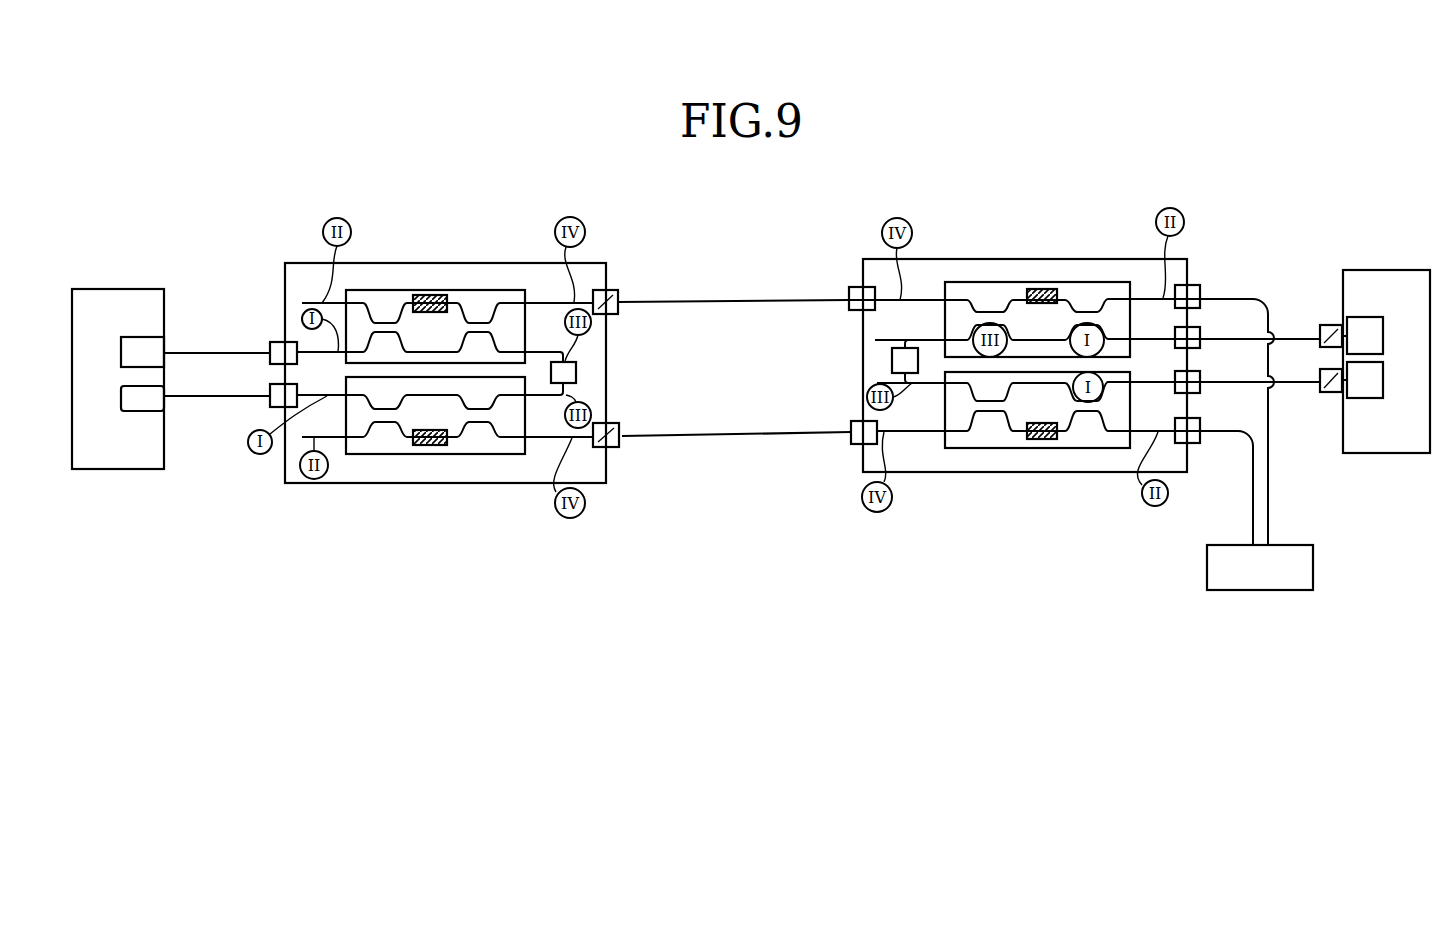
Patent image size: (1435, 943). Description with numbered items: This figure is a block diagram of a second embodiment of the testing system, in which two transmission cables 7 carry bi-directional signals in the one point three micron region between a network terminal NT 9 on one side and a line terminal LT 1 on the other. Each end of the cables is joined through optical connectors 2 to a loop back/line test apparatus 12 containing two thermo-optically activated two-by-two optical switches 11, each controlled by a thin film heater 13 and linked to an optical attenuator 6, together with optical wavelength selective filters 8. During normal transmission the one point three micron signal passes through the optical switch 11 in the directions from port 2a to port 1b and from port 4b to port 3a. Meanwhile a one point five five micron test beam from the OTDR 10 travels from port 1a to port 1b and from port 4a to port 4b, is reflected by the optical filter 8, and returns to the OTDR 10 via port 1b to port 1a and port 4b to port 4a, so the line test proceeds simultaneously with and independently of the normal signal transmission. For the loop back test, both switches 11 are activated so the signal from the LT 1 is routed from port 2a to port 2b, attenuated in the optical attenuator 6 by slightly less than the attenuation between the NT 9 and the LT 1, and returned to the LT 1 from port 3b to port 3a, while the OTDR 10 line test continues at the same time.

The line terminal LT 1 is at (1385, 268).
The optical connector 2 is at (271, 343).
The optical attenuator 6 is at (576, 369).
The transmission cable 7 is at (740, 301).
The optical wavelength selective filter 8 is at (610, 313).
The NT 9 is at (137, 289).
The OTDR 10 is at (1302, 544).
The 2×2 optical switch 11 is at (366, 290).
The loop back/line test apparatus 12 is at (458, 263).
The thin film heater 13 is at (427, 295).
The port 1a is at (788, 408).
The port 1b is at (736, 297).
The port 2a is at (1134, 345).
The port 2b is at (976, 341).
The port 3a is at (1134, 386).
The port 3b is at (736, 396).
The port 4a is at (777, 475).
The port 4b is at (736, 437).